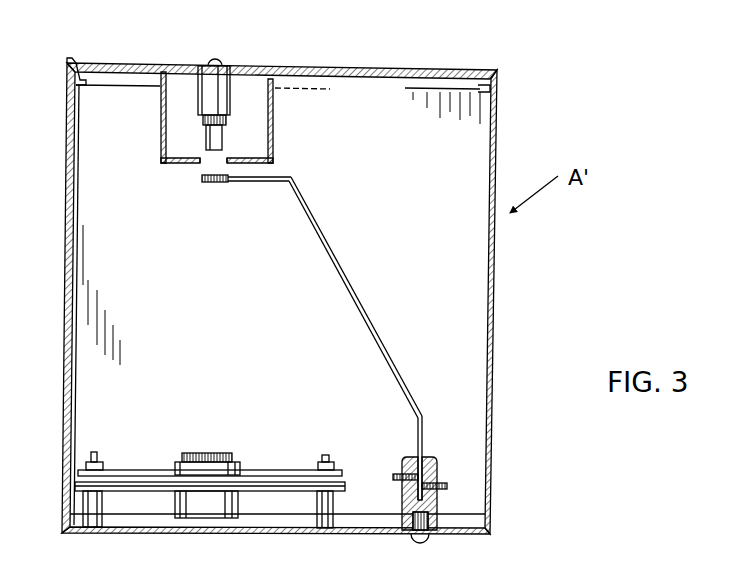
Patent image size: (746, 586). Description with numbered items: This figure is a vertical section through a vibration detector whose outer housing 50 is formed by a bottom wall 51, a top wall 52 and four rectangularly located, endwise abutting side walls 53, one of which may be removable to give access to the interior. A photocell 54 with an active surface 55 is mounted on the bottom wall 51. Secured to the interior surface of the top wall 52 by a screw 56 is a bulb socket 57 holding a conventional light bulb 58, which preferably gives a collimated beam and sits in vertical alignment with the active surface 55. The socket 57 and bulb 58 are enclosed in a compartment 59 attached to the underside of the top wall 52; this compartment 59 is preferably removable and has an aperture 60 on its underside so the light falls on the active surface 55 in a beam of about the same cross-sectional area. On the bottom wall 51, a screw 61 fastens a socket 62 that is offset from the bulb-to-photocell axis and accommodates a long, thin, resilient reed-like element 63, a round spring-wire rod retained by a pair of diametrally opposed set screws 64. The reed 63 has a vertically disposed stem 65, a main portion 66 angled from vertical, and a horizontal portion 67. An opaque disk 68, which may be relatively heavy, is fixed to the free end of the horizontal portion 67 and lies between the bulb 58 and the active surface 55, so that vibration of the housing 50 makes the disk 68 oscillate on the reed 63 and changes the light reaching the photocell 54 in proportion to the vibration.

The outer housing 50 is at (299, 302).
The bottom wall 51 is at (215, 534).
The top wall 52 is at (388, 71).
The side walls 53 is at (64, 203).
The photocell 54 is at (200, 507).
The active surface 55 is at (228, 461).
The screw 56 is at (212, 58).
The bulb socket 57 is at (225, 92).
The light bulb 58 is at (220, 142).
The compartment 59 is at (160, 128).
The aperture 60 is at (203, 163).
The screw 61 is at (416, 539).
The socket 62 is at (443, 501).
The reed-like element 63 is at (317, 337).
The set screws 64 is at (389, 474).
The stem 65 is at (424, 437).
The main portion 66 is at (352, 290).
The horizontal portion 67 is at (256, 183).
The disk 68 is at (207, 184).